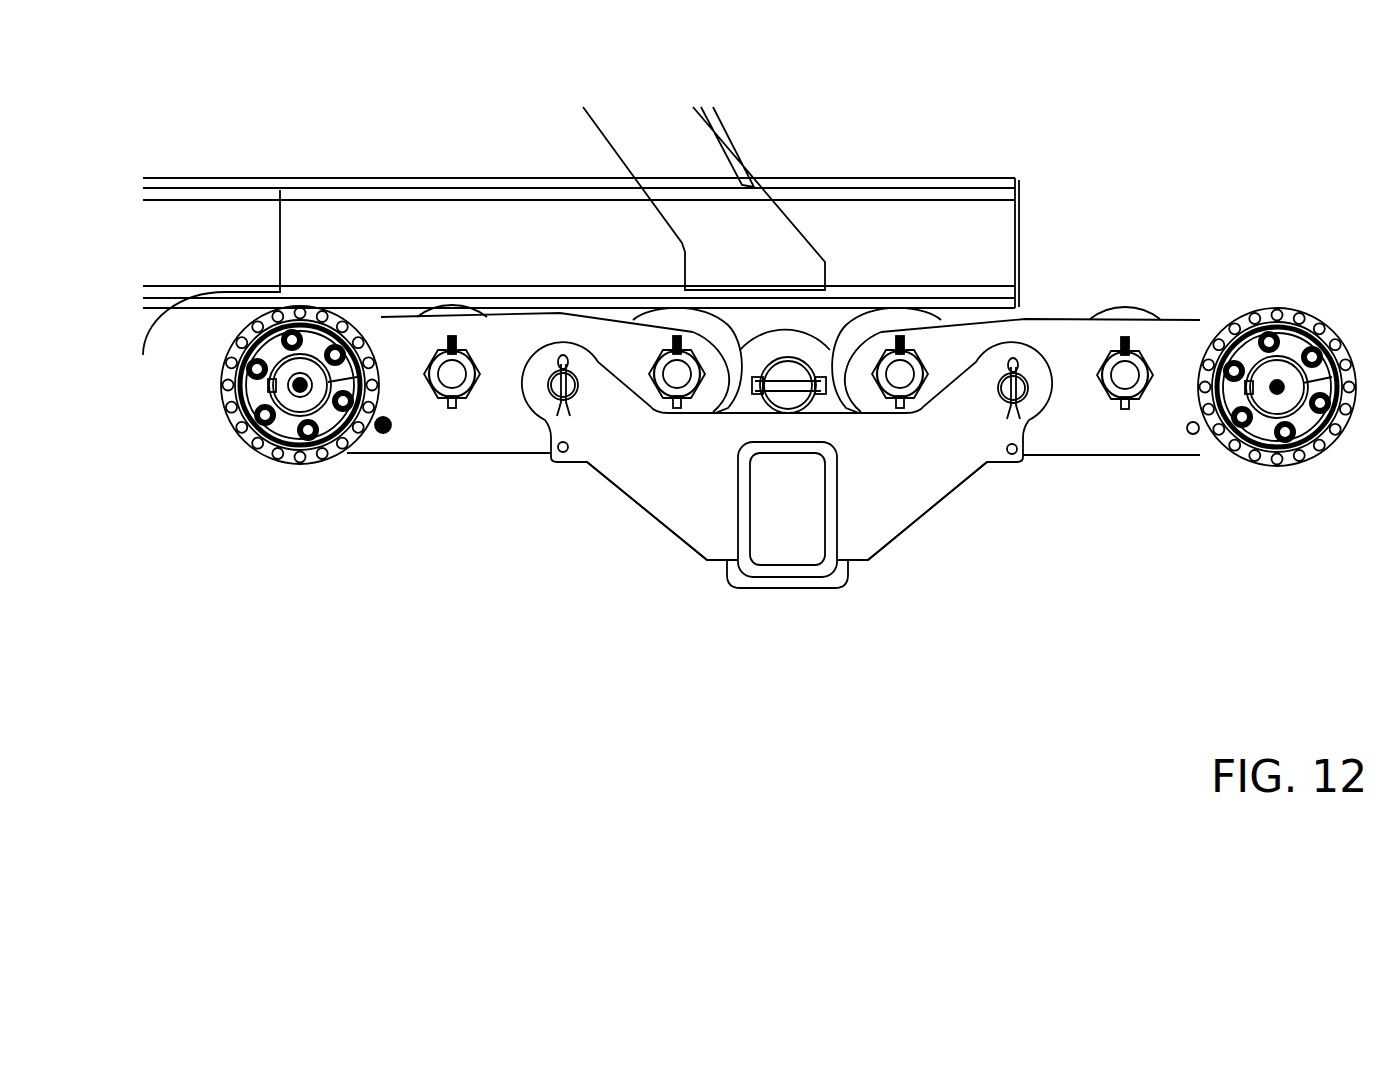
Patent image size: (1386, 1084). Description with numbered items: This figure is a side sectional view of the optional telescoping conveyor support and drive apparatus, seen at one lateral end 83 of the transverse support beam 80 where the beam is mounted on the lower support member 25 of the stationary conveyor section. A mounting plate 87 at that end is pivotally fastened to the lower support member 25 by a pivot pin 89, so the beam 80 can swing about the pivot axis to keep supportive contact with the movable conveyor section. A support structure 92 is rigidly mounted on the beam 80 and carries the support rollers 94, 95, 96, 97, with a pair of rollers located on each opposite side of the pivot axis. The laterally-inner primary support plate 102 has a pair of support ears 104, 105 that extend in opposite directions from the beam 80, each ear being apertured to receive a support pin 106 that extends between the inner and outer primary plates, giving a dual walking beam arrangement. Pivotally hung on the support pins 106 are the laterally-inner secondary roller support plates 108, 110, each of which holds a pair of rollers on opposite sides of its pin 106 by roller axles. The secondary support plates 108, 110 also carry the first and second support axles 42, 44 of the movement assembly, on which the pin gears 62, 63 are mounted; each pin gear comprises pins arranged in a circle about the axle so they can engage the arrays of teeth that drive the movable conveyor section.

The lower support member 25 is at (988, 237).
The first support axle 42 is at (1300, 412).
The second support axle 44 is at (290, 400).
The pin gear 62 is at (222, 363).
The pin gear 63 is at (1258, 308).
The transverse support beam 80 is at (837, 520).
The lateral end 83 is at (817, 588).
The mounting plate 87 is at (763, 580).
The pivot pin 89 is at (758, 422).
The support structure 92 is at (593, 537).
The support roller 94 is at (445, 310).
The support roller 95 is at (660, 305).
The support roller 96 is at (862, 320).
The support roller 97 is at (1123, 307).
The laterally-inner primary support plate 102 is at (912, 493).
The support ear 104 is at (565, 452).
The support ear 105 is at (1013, 456).
The support pin 106 is at (540, 400).
The laterally-inner secondary roller support plate 108 is at (448, 430).
The laterally-inner secondary roller support plate 110 is at (1143, 442).